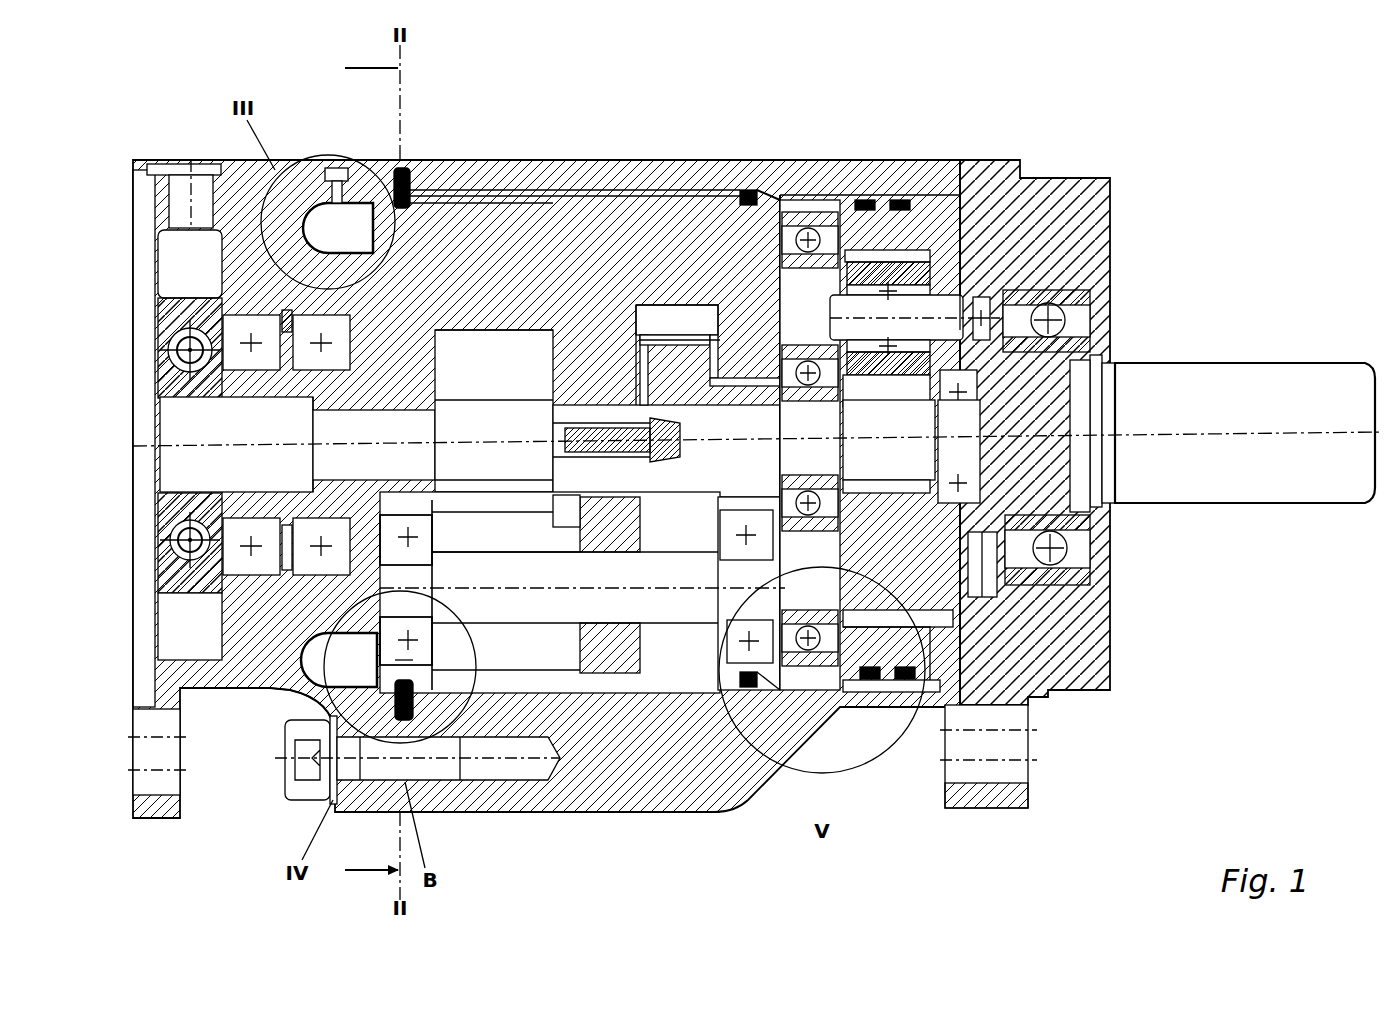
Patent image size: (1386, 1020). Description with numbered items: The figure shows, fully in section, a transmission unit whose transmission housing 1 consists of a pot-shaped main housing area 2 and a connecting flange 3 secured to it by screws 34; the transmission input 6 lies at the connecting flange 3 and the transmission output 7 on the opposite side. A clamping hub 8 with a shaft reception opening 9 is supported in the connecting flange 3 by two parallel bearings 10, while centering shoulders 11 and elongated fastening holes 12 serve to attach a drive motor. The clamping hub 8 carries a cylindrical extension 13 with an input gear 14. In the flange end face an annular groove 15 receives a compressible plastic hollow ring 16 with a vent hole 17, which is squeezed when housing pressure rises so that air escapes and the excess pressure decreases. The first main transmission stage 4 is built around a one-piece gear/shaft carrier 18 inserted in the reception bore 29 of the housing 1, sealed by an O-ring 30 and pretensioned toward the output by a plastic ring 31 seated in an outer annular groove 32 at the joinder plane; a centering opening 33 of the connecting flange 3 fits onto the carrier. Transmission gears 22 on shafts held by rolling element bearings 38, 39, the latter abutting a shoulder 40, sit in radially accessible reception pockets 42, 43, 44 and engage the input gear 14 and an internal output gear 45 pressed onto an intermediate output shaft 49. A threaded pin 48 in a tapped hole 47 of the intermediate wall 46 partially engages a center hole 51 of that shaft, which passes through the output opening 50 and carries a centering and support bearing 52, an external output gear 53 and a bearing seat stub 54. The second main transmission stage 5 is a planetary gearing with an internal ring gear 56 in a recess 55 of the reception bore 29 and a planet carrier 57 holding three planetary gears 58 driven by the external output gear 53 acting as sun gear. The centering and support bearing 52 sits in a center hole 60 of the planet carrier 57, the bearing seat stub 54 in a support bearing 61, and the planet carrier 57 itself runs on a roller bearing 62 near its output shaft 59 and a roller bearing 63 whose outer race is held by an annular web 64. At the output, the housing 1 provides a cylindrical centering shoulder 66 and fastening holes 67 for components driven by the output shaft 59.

The transmission housing 1 is at (560, 152).
The main housing area 2 is at (600, 160).
The connecting flange 3 is at (240, 688).
The first main transmission stage 4 is at (515, 160).
The second main transmission stage 5 is at (822, 158).
The transmission input 6 is at (127, 438).
The transmission output 7 is at (1192, 322).
The clamping hub 8 is at (178, 536).
The shaft reception opening 9 is at (180, 492).
The bearings 10 is at (230, 548).
The centering shoulders 11 is at (155, 280).
The fastening holes 12 is at (165, 728).
The cylindrical extension 13 is at (228, 382).
The input gear 14 is at (486, 440).
The annular groove 15 is at (355, 215).
The hollow ring 16 is at (308, 212).
The vent hole 17 is at (334, 195).
The gear/shaft carrier 18 is at (455, 200).
The transmission gears 22 is at (600, 690).
The reception bore 29 is at (535, 690).
The O-ring 30 is at (733, 160).
The plastic ring 31 is at (408, 158).
The outer annular groove 32 is at (420, 660).
The centering opening 33 is at (380, 195).
The screws 34 is at (300, 770).
The rolling element bearings 38 is at (425, 640).
The rolling element bearings 39 is at (727, 648).
The shoulder 40 is at (760, 670).
The reception pocket 42 is at (496, 200).
The reception pocket 43 is at (600, 460).
The reception pocket 44 is at (650, 320).
The internal output gear 45 is at (670, 340).
The intermediate wall 46 is at (488, 472).
The tapped hole 47 is at (567, 445).
The threaded pin 48 is at (572, 495).
The intermediate output shaft 49 is at (660, 660).
The output opening 50 is at (665, 545).
The center hole 51 is at (680, 430).
The centering and support bearing 52 is at (905, 585).
The external output gear 53 is at (903, 640).
The bearing seat stub 54 is at (1085, 502).
The recess 55 is at (802, 195).
The internal ring gear 56 is at (927, 225).
The planet carrier 57 is at (1035, 585).
The planetary gears 58 is at (972, 178).
The output shaft 59 is at (1237, 460).
The center hole 60 is at (795, 495).
The support bearing 61 is at (1093, 352).
The roller bearing 62 is at (1100, 285).
The roller bearing 63 is at (832, 210).
The annular web 64 is at (757, 190).
The centering shoulder 66 is at (1093, 160).
The fastening holes 67 is at (1002, 767).